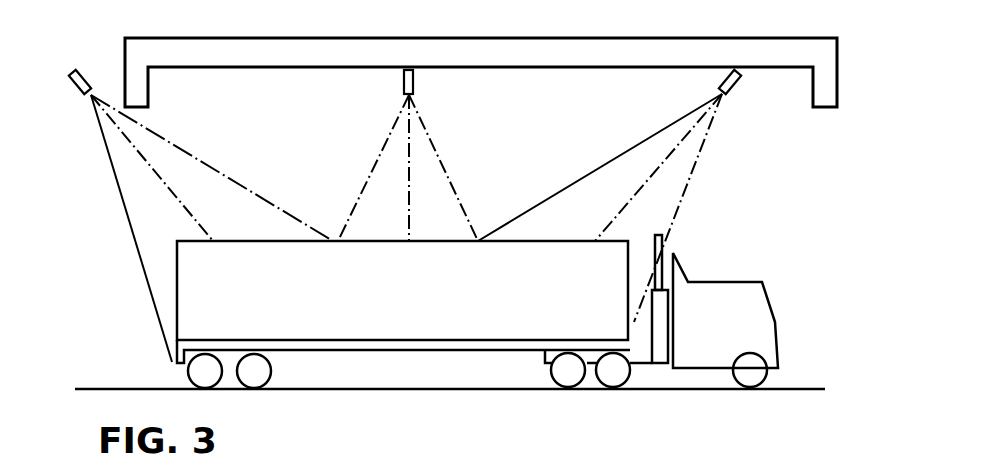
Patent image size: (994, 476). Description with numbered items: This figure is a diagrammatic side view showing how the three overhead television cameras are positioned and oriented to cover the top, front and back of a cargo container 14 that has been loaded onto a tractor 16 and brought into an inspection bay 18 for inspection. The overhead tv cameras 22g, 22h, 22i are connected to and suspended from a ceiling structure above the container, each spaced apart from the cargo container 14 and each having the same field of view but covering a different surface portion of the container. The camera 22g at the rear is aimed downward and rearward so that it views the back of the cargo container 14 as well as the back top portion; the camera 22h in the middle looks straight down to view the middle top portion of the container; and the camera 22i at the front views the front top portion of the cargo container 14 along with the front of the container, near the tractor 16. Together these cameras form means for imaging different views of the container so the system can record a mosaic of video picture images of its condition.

The cargo container 14 is at (416, 293).
The tractor 16 is at (710, 283).
The inspection bay 18 is at (140, 263).
The overhead tv camera 22g is at (88, 70).
The overhead tv camera 22h is at (416, 78).
The overhead tv camera 22i is at (736, 72).